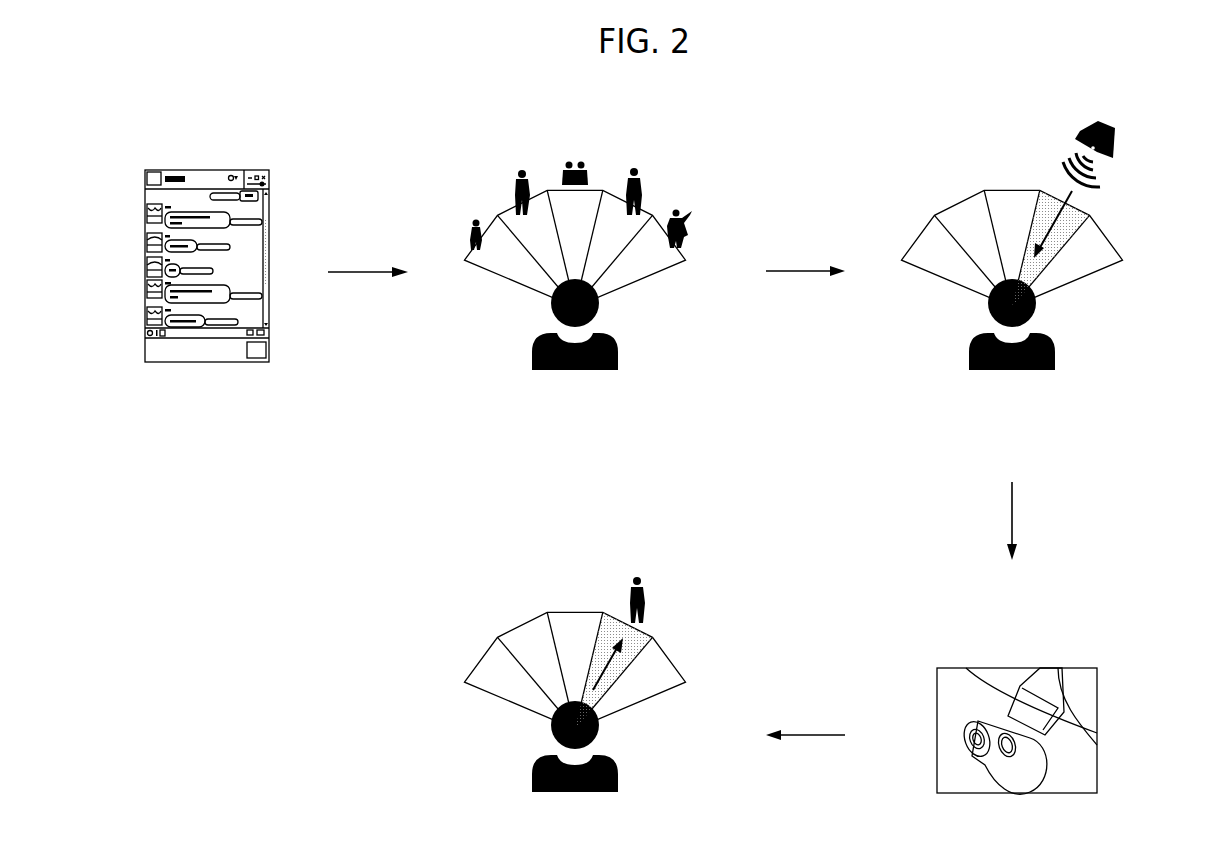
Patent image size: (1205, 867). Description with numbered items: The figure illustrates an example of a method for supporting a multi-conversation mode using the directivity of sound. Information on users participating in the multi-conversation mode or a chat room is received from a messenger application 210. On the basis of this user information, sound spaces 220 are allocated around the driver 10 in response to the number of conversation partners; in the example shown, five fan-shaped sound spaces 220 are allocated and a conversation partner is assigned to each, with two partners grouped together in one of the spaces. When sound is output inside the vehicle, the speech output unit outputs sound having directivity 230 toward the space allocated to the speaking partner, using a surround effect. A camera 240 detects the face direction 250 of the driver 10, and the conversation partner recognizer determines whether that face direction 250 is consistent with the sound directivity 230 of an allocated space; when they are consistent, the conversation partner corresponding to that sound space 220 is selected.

The messenger application 210 is at (213, 169).
The sound spaces 220 is at (493, 273).
The driver 10 is at (560, 372).
The sound directivity 230 is at (1062, 215).
The camera 240 is at (1052, 765).
The face direction 250 is at (610, 659).